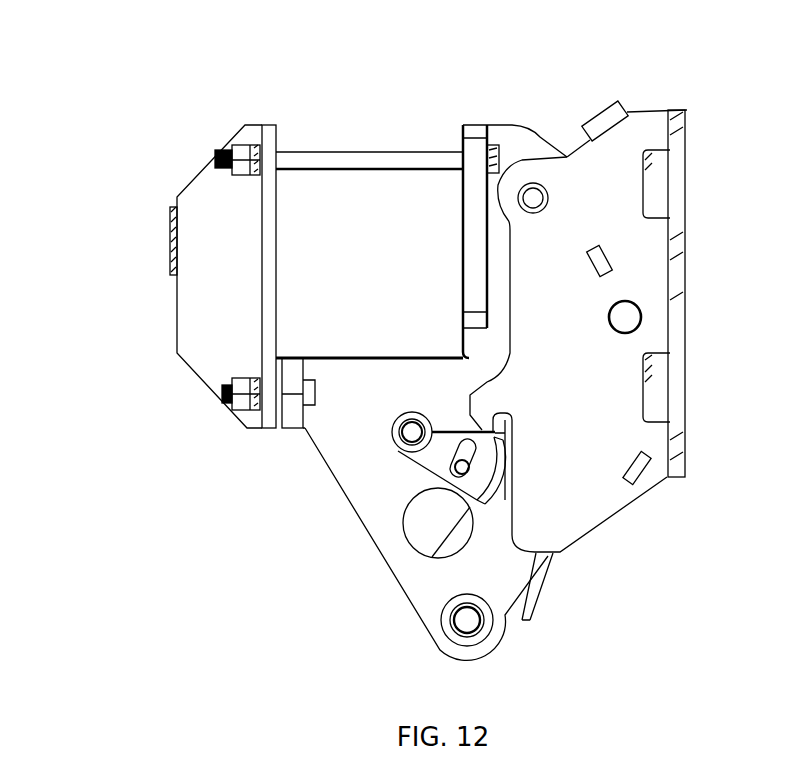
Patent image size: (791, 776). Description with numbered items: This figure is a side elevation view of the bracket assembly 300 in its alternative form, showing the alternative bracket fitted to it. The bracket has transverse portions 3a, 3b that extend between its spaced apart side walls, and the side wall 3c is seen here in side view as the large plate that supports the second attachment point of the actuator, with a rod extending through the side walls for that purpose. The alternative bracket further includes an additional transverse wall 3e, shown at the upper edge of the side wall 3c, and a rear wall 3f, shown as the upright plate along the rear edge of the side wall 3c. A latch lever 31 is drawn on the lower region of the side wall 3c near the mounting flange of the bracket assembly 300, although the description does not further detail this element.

The bracket assembly 300 is at (99, 97).
The latch lever 31 is at (487, 383).
The transverse portion 3a is at (592, 270).
The transverse portion 3b is at (633, 467).
The side wall 3c is at (573, 512).
The transverse wall 3e is at (605, 112).
The rear wall 3f is at (685, 250).